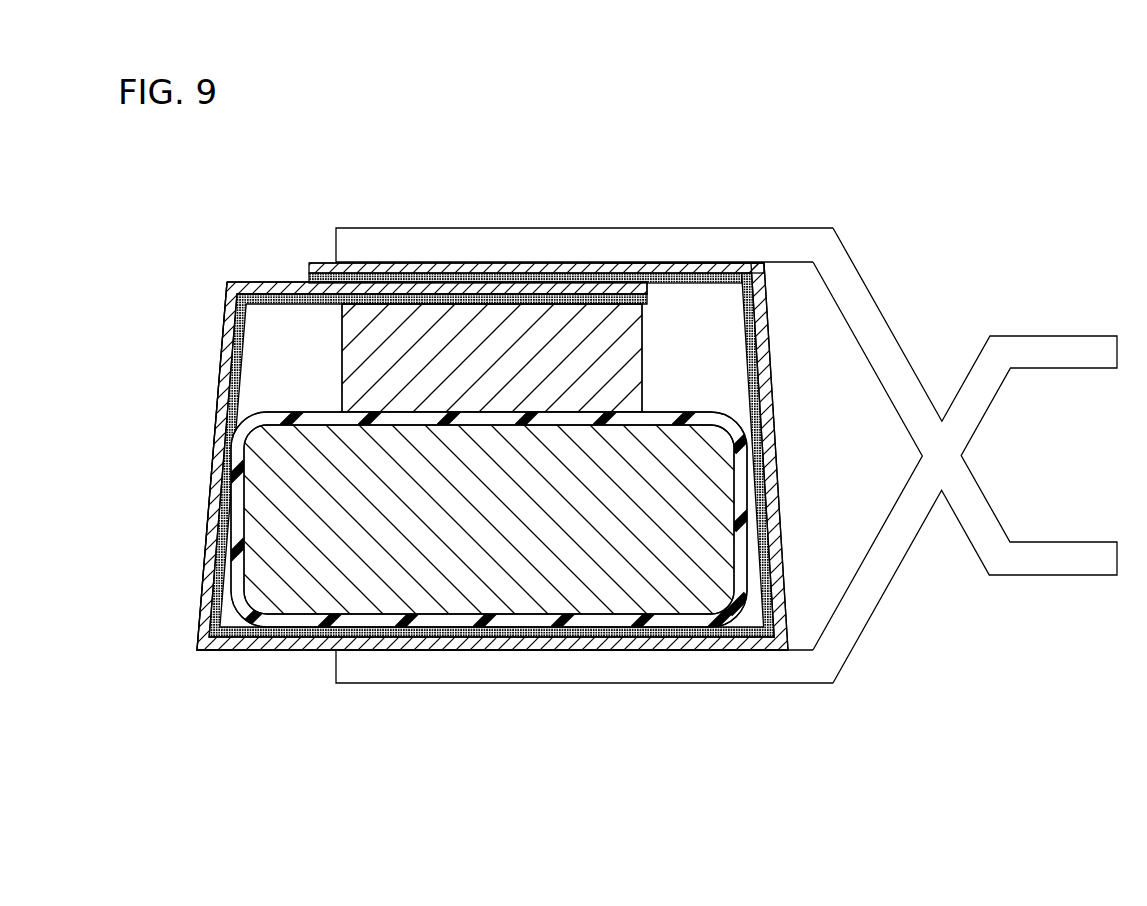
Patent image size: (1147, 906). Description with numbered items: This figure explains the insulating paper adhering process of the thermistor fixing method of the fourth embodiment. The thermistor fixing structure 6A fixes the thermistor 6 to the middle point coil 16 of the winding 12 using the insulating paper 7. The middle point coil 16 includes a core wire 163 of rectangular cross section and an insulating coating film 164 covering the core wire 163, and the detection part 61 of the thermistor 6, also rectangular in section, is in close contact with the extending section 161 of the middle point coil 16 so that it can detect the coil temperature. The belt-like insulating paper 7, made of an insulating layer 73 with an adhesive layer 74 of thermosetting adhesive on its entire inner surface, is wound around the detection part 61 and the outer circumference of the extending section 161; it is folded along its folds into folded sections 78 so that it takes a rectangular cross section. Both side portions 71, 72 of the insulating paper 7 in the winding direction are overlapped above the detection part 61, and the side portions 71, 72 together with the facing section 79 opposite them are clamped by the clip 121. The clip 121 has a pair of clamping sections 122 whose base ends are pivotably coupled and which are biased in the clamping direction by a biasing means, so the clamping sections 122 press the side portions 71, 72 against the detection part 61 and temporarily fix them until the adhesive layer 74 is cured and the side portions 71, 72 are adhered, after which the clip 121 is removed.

The thermistor fixing structure 6A is at (268, 276).
The thermistor 6 is at (647, 332).
The detection part 61 is at (625, 362).
The insulating paper 7 is at (789, 602).
The winding 12 is at (682, 638).
The middle point coil 16 is at (489, 631).
The extending section 161 is at (489, 616).
The core wire 163 is at (560, 600).
The insulating coating film 164 is at (497, 622).
The side portion 71 is at (503, 268).
The side portion 72 is at (569, 293).
The insulating layer 73 is at (641, 267).
The adhesive layer 74 is at (607, 277).
The folded section 78 is at (197, 649).
The facing section 79 is at (380, 637).
The clip 121 is at (849, 252).
The clamping section 122 is at (404, 242).